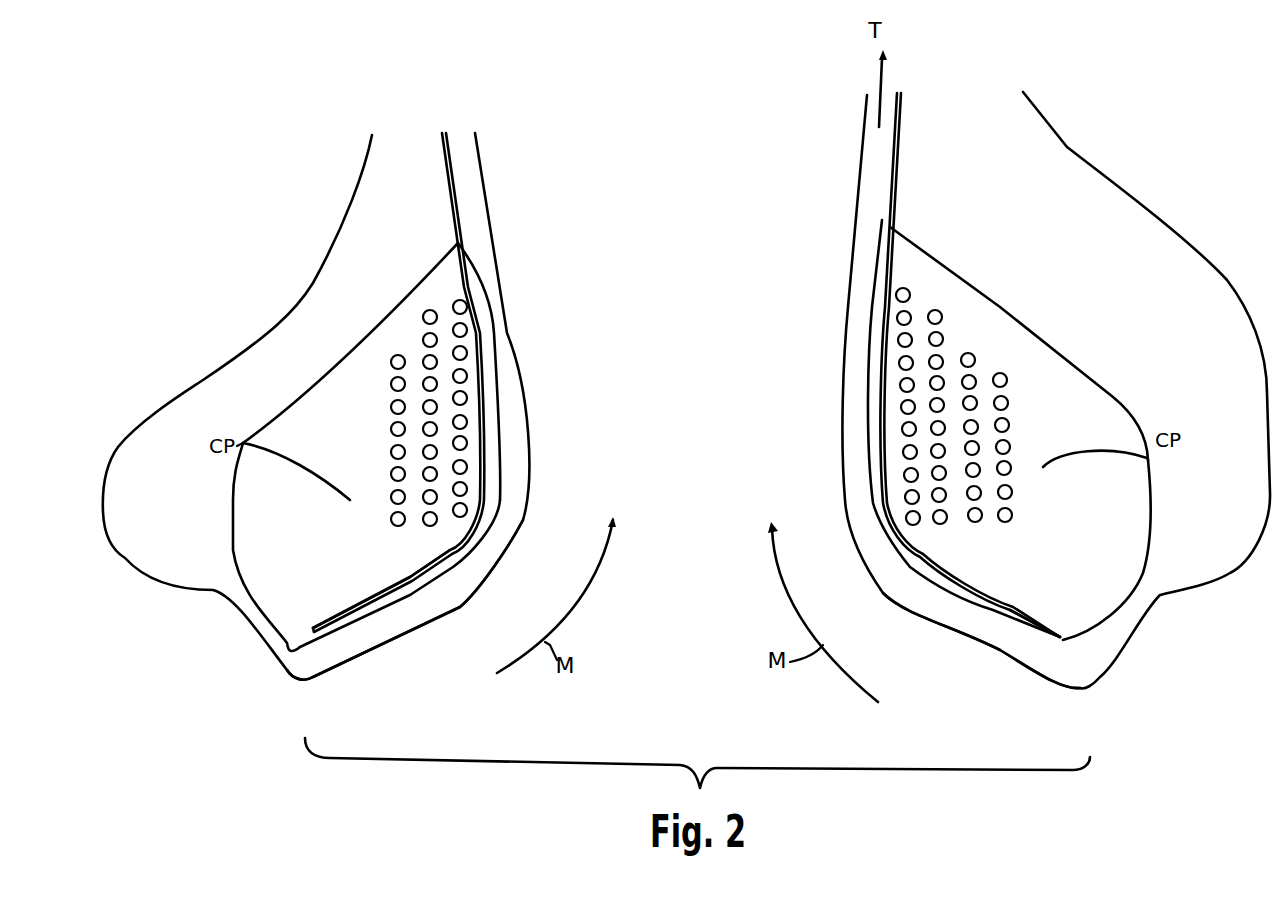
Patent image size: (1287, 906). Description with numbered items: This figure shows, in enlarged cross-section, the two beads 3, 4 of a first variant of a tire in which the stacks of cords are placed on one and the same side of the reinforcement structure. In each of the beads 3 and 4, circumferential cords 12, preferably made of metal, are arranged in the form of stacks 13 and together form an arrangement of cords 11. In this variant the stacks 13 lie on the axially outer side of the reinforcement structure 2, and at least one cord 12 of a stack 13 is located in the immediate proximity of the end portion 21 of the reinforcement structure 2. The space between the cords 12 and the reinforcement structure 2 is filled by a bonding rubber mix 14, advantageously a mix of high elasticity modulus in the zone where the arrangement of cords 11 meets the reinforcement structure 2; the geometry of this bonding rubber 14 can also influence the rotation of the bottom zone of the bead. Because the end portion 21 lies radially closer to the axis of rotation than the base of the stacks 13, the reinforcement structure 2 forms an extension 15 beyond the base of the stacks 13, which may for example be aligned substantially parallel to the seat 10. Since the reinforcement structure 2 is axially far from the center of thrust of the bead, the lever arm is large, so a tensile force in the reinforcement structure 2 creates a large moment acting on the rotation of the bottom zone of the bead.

The reinforcement structure 2 is at (448, 162).
The bead 3 is at (347, 417).
The bead 4 is at (1048, 417).
The seat 10 is at (368, 655).
The arrangement of cords 11 is at (396, 312).
The circumferential cords 12 is at (460, 330).
The stacks 13 is at (458, 425).
The bonding rubber mix 14 is at (477, 443).
The extension 15 is at (407, 580).
The end portion 21 is at (487, 375).